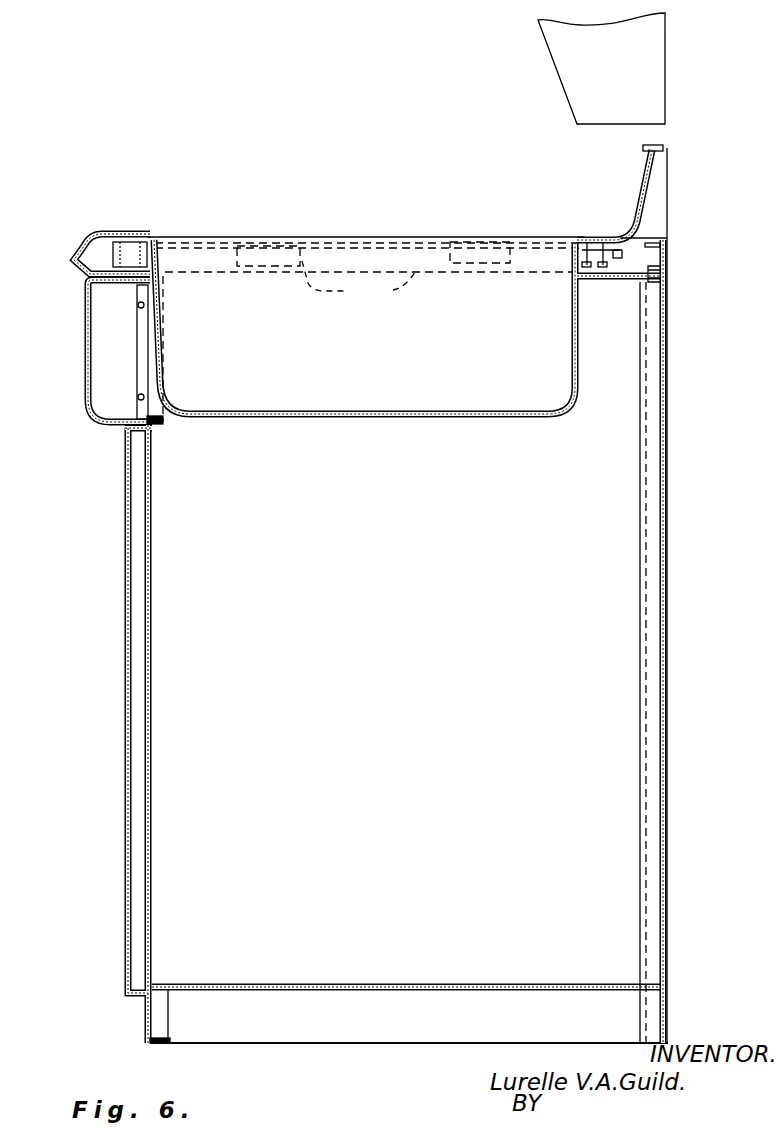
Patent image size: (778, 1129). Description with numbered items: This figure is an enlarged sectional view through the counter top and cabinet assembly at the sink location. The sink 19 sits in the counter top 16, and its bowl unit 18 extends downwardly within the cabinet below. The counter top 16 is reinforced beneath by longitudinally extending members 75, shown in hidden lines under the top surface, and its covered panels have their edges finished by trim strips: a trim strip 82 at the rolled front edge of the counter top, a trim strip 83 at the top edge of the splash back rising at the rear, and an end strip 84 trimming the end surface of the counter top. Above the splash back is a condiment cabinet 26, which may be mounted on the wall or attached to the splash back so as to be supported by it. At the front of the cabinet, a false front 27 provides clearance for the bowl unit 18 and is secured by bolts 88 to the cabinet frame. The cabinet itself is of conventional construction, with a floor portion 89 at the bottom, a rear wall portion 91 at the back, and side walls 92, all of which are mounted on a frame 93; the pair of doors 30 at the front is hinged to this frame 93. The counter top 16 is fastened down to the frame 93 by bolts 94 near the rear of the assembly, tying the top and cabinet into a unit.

The counter top 16 is at (500, 236).
The bowl unit 18 is at (537, 400).
The sink 19 is at (133, 234).
The condiment cabinet 26 is at (578, 77).
The false front 27 is at (88, 370).
The doors 30 is at (127, 687).
The longitudinally extending members 75 is at (373, 274).
The trim strip 82 is at (80, 259).
The trim strip 83 is at (660, 148).
The end strip 84 is at (597, 236).
The bolts 88 is at (140, 397).
The floor portion 89 is at (408, 988).
The rear wall portion 91 is at (665, 848).
The side walls 92 is at (615, 695).
The frame 93 is at (655, 605).
The bolts 94 is at (665, 264).